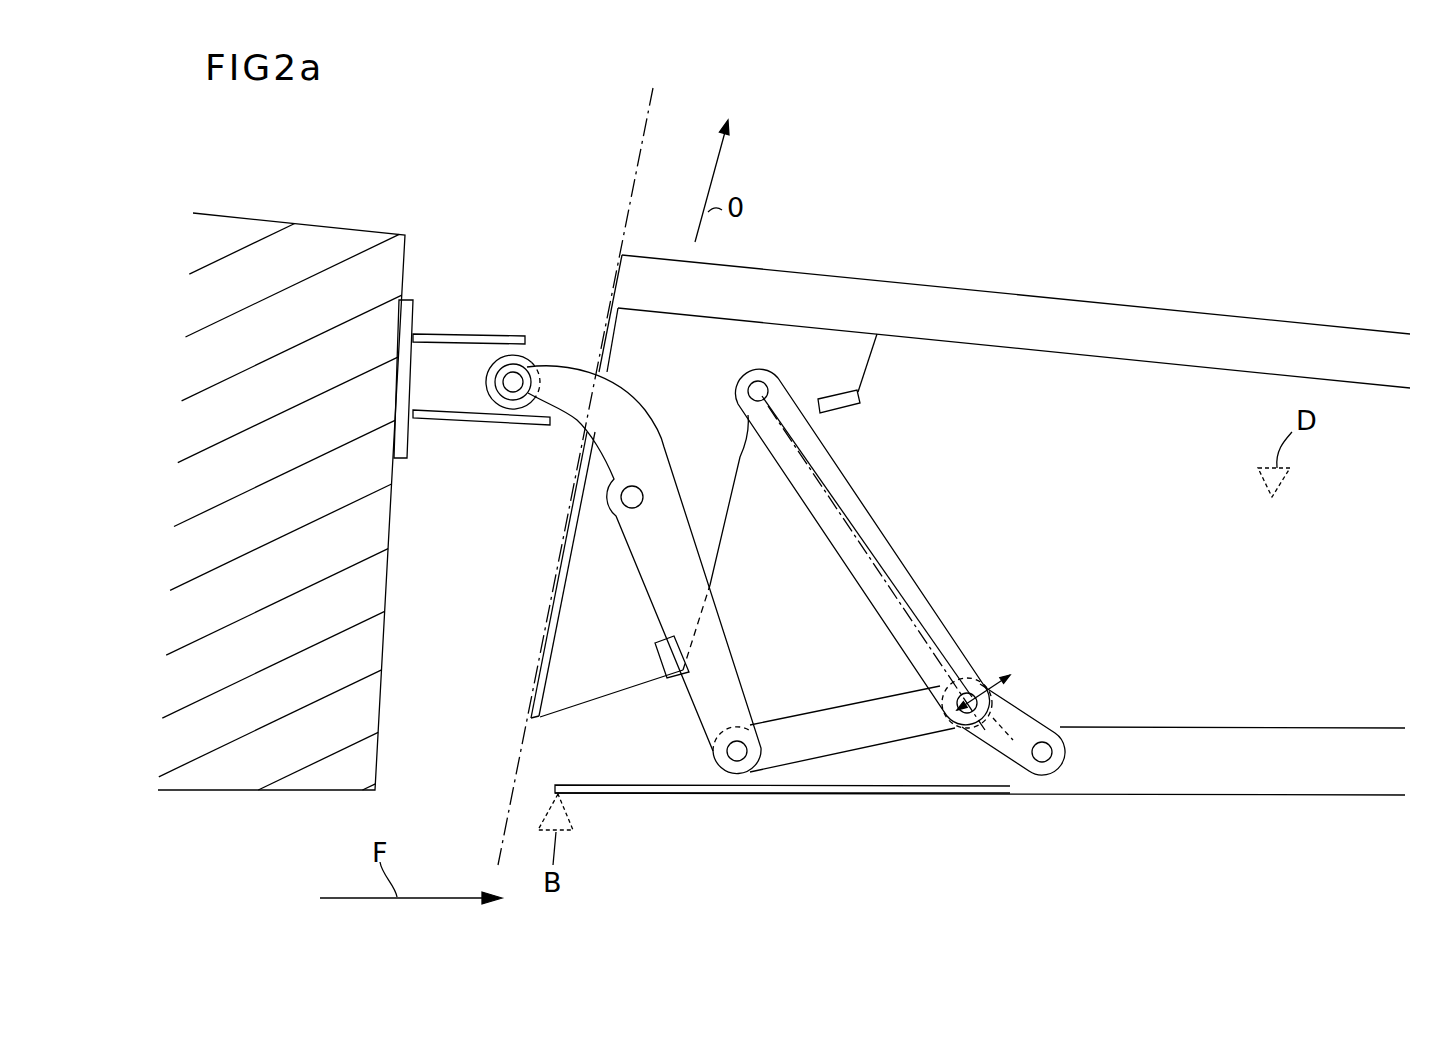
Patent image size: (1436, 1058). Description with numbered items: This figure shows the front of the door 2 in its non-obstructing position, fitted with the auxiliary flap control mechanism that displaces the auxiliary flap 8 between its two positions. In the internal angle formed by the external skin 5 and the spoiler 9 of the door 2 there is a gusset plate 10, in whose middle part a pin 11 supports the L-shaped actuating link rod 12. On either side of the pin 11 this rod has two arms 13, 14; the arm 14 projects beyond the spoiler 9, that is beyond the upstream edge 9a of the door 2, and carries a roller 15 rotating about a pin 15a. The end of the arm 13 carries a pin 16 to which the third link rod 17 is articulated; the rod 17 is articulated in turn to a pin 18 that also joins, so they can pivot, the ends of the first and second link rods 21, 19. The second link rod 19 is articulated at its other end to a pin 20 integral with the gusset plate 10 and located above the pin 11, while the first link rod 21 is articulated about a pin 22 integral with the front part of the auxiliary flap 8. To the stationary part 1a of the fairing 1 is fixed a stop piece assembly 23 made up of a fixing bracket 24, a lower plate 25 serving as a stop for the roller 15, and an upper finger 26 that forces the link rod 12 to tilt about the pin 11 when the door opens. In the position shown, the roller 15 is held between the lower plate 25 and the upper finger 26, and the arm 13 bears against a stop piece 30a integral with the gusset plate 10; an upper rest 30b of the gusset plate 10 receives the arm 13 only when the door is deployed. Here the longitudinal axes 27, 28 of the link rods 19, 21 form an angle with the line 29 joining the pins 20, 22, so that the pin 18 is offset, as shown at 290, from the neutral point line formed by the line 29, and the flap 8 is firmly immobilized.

The fairing 1 is at (279, 203).
The stationary part of the fairing 1a is at (274, 526).
The door 2 is at (1107, 282).
The external skin 5 is at (988, 290).
The auxiliary flap 8 is at (1136, 818).
The spoiler 9 is at (556, 591).
The upstream edge of the door 9a is at (653, 106).
The gusset plate 10 is at (680, 365).
The pin 11 is at (615, 513).
The actuating link rod 12 is at (615, 559).
The arm 13 is at (724, 627).
The arm 14 is at (567, 367).
The roller 15 is at (508, 408).
The pin 15a is at (514, 380).
The pin 16 is at (720, 770).
The third link rod 17 is at (805, 763).
The pin 18 is at (980, 673).
The second link rod 19 is at (885, 522).
The pin 20 is at (762, 388).
The first link rod 21 is at (1012, 763).
The pin 22 is at (1042, 765).
The stop piece assembly 23 is at (499, 319).
The fixing bracket 24 is at (398, 343).
The lower plate 25 is at (449, 420).
The upper finger 26 is at (467, 336).
The longitudinal axis 27 is at (912, 628).
The longitudinal axis 28 is at (965, 750).
The line 29 is at (843, 497).
The stop piece 30a is at (667, 677).
The upper rest 30b is at (862, 402).
The offset 290 is at (995, 697).